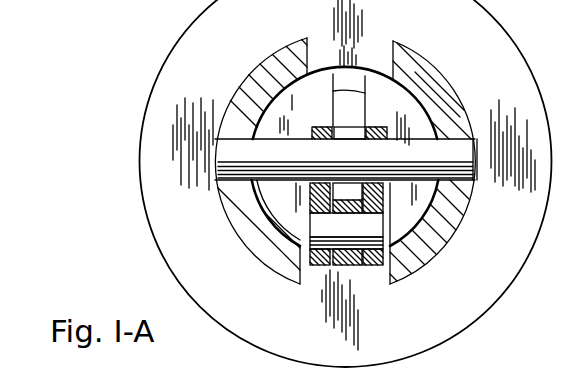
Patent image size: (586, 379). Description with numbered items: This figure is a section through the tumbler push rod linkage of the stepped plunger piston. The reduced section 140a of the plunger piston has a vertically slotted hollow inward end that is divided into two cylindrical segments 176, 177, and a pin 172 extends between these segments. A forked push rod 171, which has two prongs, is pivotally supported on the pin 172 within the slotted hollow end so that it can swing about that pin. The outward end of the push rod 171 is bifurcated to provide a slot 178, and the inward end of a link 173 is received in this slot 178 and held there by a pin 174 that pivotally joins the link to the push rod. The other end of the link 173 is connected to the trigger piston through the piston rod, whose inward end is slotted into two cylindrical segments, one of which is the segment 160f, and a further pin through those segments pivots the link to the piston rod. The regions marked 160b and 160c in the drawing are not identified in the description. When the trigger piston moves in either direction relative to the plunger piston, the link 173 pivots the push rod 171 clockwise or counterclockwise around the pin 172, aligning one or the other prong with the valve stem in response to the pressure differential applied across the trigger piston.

The reduced section of the plunger piston 140a is at (196, 37).
The cylindrical segment 176 is at (246, 81).
The cylindrical segment 177 is at (457, 98).
The central pole 160b is at (365, 82).
The left pole piece 160c is at (321, 112).
The cylindrical segment 160f is at (397, 112).
The pin 172 is at (357, 160).
The forked push rod 171 is at (378, 205).
The slot 178 is at (343, 204).
The pin 174 is at (358, 230).
The link 173 is at (349, 266).